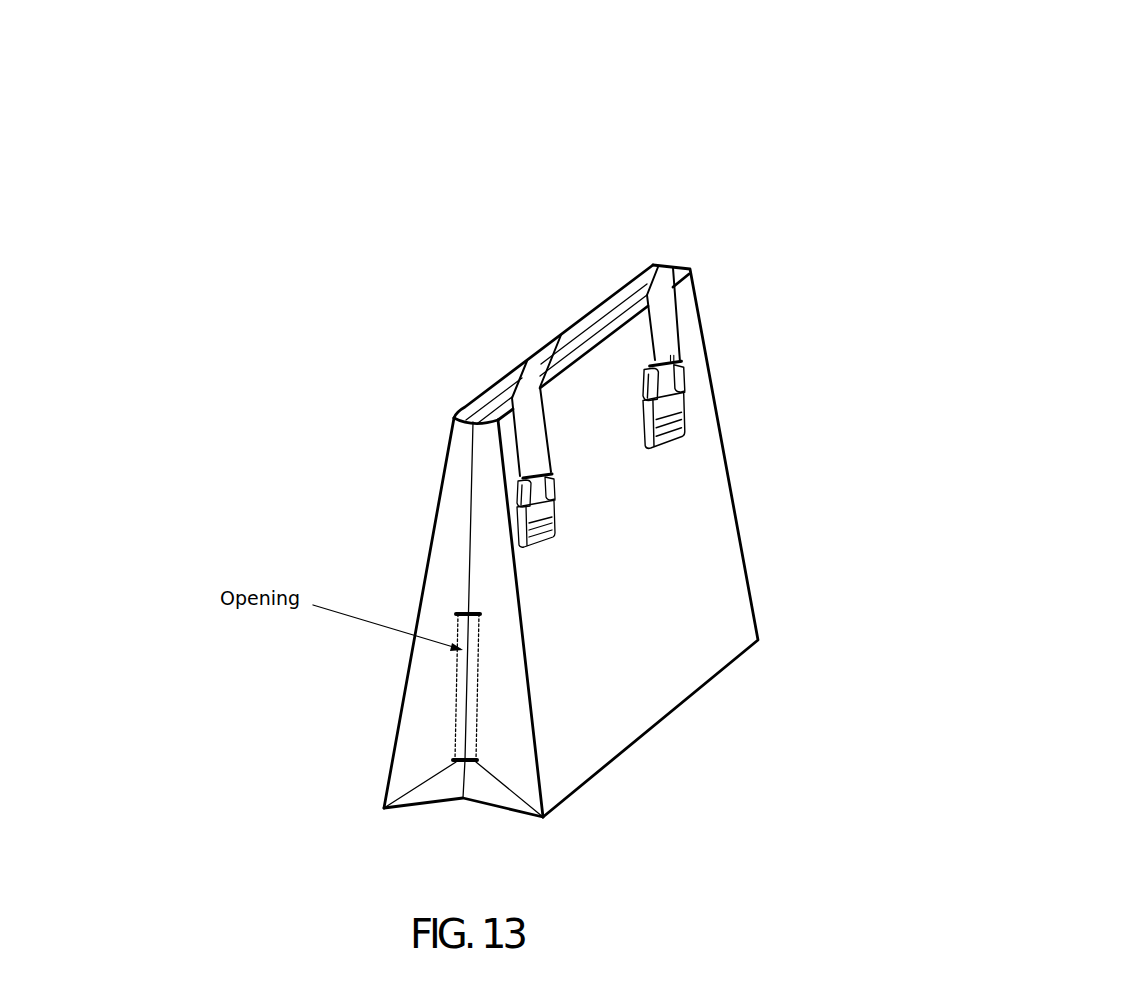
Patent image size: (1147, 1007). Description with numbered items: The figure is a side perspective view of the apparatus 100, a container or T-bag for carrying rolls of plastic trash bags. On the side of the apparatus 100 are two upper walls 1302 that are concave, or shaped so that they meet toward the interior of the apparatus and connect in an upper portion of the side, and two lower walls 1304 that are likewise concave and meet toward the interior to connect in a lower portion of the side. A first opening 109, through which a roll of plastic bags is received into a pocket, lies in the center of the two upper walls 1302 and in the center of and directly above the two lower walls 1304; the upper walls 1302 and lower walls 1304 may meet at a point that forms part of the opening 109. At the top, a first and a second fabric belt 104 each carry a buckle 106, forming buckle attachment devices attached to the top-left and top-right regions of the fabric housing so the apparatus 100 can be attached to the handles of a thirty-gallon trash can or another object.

The apparatus 100 is at (1036, 92).
The fabric belt 104 is at (545, 423).
The buckle 106 is at (557, 490).
The first opening 109 is at (477, 702).
The upper walls 1302 is at (503, 615).
The lower walls 1304 is at (488, 800).